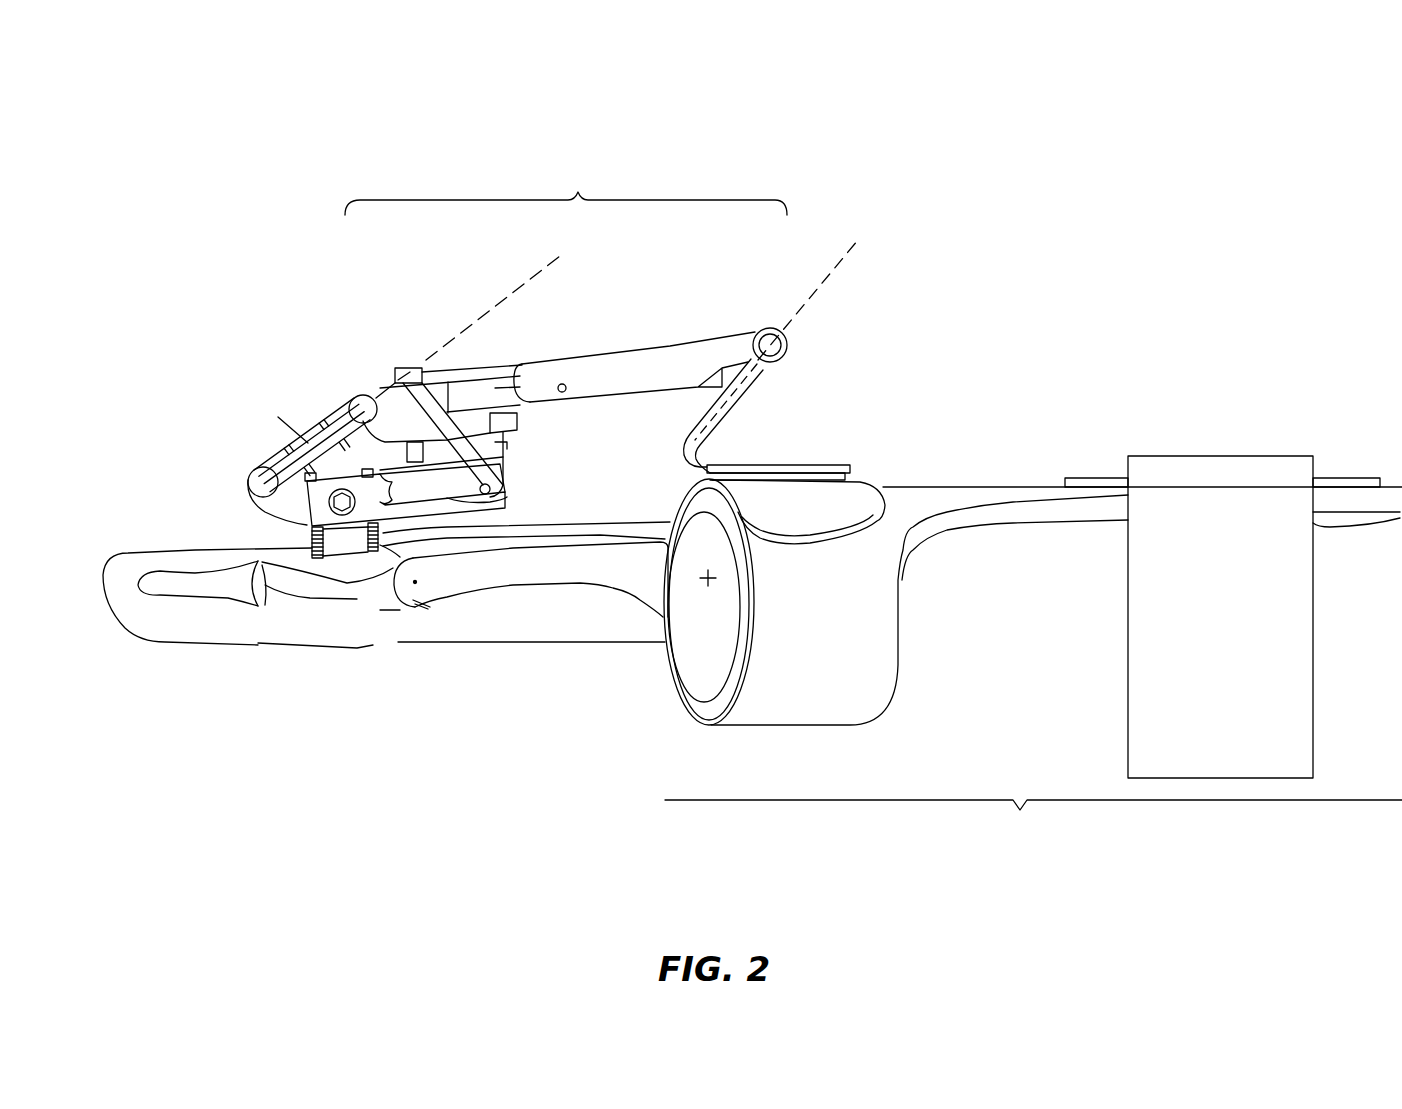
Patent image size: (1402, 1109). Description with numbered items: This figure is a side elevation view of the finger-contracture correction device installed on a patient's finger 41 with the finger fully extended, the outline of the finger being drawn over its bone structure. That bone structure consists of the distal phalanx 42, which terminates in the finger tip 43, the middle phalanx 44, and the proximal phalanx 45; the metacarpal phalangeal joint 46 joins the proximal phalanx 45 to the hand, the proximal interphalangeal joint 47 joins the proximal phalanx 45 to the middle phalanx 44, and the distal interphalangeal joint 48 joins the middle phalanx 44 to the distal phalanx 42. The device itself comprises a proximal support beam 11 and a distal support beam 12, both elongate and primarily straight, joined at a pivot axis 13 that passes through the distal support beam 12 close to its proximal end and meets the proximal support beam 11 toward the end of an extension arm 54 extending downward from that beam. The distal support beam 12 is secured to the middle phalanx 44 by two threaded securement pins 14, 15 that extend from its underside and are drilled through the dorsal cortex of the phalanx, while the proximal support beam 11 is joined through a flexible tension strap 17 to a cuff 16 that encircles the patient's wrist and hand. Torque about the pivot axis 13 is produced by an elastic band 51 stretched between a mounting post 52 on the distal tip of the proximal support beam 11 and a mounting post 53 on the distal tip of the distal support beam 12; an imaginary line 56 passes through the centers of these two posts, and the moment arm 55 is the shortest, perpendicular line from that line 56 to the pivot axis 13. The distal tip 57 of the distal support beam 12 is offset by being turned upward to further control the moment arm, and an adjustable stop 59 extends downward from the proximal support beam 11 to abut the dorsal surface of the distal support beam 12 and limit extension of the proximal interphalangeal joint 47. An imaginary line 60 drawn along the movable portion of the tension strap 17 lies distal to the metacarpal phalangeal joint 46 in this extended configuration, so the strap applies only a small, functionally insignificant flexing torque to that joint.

The proximal support beam 11 is at (590, 189).
The distal support beam 12 is at (455, 498).
The pivot axis 13 is at (505, 485).
The securement pin 14 is at (312, 540).
The securement pin 15 is at (383, 521).
The cuff 16 is at (1020, 812).
The tension strap 17 is at (728, 406).
The finger 41 is at (373, 646).
The distal phalanx 42 is at (207, 590).
The finger tip 43 is at (98, 560).
The middle phalanx 44 is at (347, 587).
The proximal phalanx 45 is at (527, 572).
The metacarpal phalangeal (MP) joint 46 is at (707, 580).
The proximal interphalangeal (PIP) joint 47 is at (416, 586).
The distal interphalangeal (DIP) joint 48 is at (258, 588).
The elastic band 51 is at (331, 410).
The mounting post 52 is at (366, 395).
The mounting post 53 is at (259, 470).
The extension arm 54 is at (505, 446).
The moment arm 55 is at (477, 410).
The imaginary line 56 is at (511, 298).
The distal tip 57 is at (267, 506).
The adjustable stop 59 is at (275, 420).
The imaginary line 60 is at (818, 290).